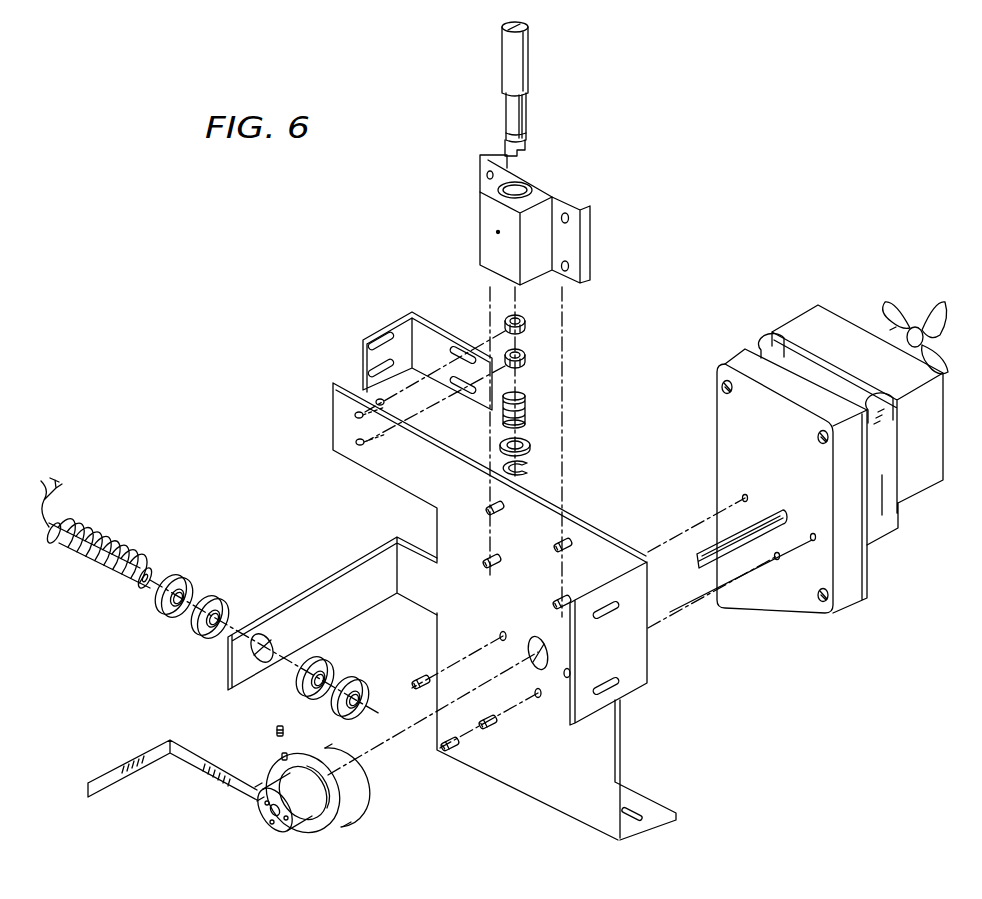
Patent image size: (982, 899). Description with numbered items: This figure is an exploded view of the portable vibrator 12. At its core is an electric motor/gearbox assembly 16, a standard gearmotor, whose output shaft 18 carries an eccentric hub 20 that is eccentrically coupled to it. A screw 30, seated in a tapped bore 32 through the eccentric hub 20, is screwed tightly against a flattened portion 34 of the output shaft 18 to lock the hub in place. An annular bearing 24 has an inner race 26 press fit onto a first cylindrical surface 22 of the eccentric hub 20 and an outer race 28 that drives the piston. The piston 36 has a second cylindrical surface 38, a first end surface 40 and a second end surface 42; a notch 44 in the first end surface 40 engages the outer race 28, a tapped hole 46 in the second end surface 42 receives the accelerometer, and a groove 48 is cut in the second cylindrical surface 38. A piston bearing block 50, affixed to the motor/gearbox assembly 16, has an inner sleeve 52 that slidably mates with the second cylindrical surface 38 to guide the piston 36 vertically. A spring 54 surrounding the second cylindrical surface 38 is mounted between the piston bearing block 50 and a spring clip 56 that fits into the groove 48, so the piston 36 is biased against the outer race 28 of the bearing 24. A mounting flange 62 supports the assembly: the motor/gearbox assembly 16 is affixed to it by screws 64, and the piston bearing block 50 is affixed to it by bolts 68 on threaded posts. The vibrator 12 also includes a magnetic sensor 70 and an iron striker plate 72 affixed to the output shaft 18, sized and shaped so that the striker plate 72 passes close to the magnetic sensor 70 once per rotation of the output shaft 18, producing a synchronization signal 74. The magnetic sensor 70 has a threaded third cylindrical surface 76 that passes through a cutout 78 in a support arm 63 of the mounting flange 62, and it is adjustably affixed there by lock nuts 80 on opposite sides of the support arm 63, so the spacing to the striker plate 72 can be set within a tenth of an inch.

The vibrator 12 is at (760, 214).
The electric motor/gearbox assembly 16 is at (868, 565).
The output shaft 18 is at (718, 560).
The eccentric hub 20 is at (300, 835).
The first cylindrical surface 22 is at (262, 813).
The annular bearing 24 is at (314, 778).
The inner race 26 is at (338, 820).
The outer race 28 is at (282, 757).
The screw 30 is at (284, 727).
The tapped bore 32 is at (257, 790).
The flattened portion 34 is at (718, 548).
The piston 36 is at (517, 117).
The second cylindrical surface 38 is at (526, 123).
The first end surface 40 is at (487, 155).
The second end surface 42 is at (530, 27).
The notch 44 is at (527, 148).
The tapped hole 46 is at (503, 34).
The groove 48 is at (507, 135).
The piston bearing block 50 is at (480, 223).
The inner sleeve 52 is at (533, 186).
The spring 54 is at (526, 409).
The spring clip 56 is at (529, 467).
The mounting flange 62 is at (602, 740).
The support arm 63 is at (372, 551).
The screws 64 is at (418, 675).
The bolts 68 is at (487, 506).
The magnetic sensor 70 is at (76, 556).
The striker plate 72 is at (111, 784).
The synchronization signal 74 is at (38, 477).
The third cylindrical surface 76 is at (127, 556).
The cutout 78 is at (268, 633).
The lock nuts 80 is at (222, 592).